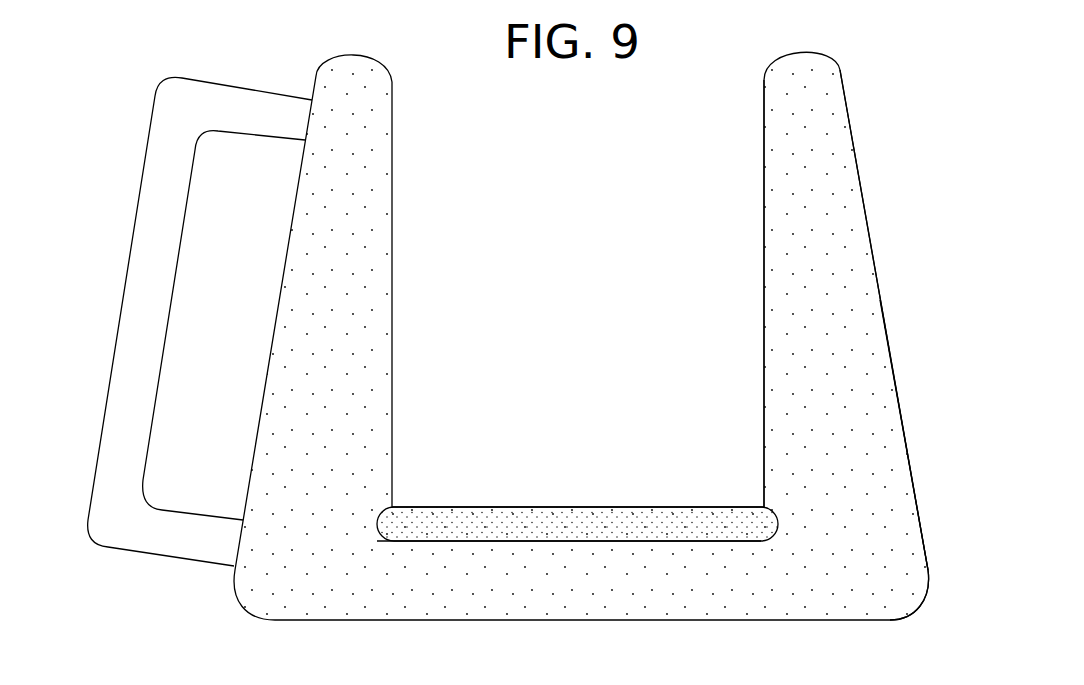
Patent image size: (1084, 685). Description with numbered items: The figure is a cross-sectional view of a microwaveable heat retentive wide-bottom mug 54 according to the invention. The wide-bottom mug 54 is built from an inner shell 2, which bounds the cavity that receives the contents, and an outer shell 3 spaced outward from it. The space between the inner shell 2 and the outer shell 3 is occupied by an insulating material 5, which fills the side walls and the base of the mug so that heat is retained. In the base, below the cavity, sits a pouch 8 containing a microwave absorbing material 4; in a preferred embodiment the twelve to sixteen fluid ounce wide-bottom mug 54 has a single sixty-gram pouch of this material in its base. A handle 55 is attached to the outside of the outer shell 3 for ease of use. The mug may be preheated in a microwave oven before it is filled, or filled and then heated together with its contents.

The wide-bottom mug 54 is at (582, 200).
The inner shell 2 is at (763, 249).
The outer shell 3 is at (880, 303).
The insulating material 5 is at (892, 512).
The microwave absorbing material 4 is at (733, 512).
The pouch 8 is at (631, 544).
The handle 55 is at (165, 157).